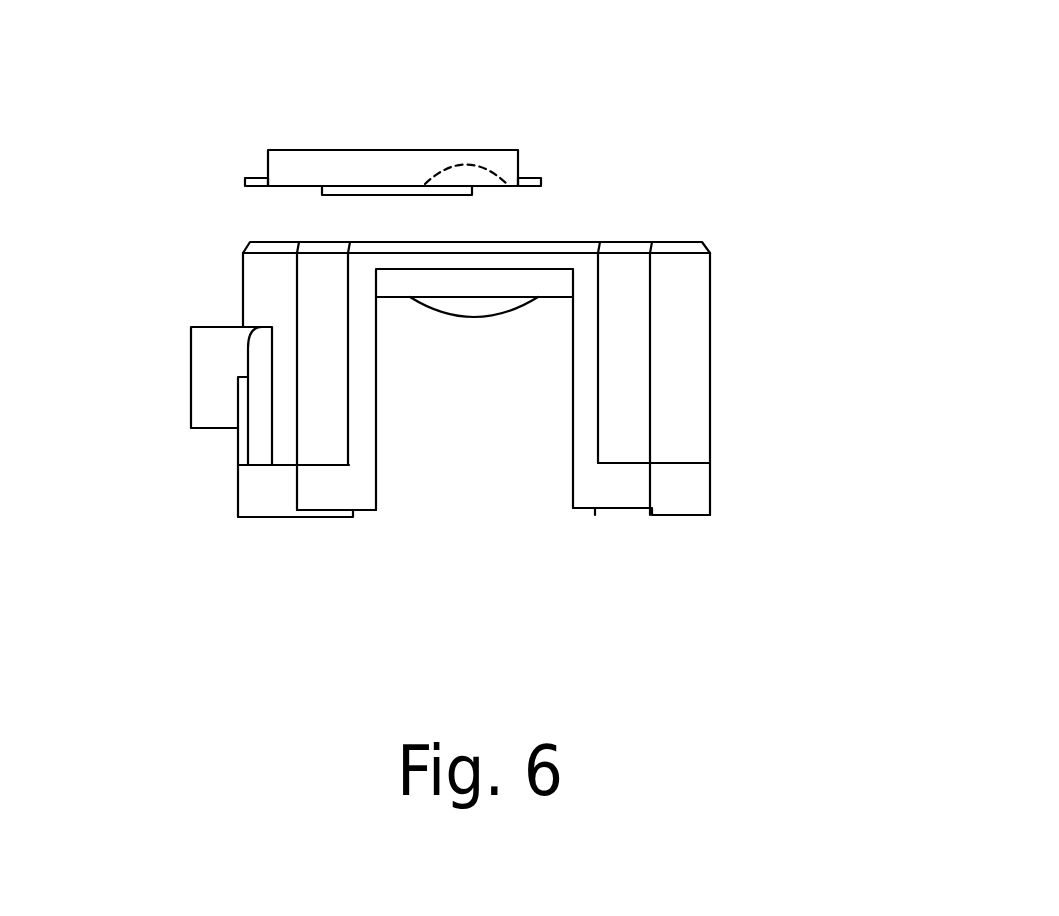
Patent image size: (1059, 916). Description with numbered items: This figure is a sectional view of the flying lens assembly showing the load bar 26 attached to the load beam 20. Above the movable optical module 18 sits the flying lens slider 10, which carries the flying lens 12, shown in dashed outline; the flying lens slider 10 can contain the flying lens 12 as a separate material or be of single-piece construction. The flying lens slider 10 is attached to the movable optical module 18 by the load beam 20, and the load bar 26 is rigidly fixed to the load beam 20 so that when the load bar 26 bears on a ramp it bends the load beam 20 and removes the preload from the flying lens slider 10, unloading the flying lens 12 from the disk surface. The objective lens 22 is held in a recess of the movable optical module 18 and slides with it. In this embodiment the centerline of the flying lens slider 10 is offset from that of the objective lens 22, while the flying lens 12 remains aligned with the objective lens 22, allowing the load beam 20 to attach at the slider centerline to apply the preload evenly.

The flying lens slider 10 is at (345, 150).
The flying lens 12 is at (478, 163).
The movable optical module 18 is at (772, 257).
The load beam 20 is at (413, 195).
The objective lens 22 is at (488, 318).
The load bar 26 is at (255, 178).